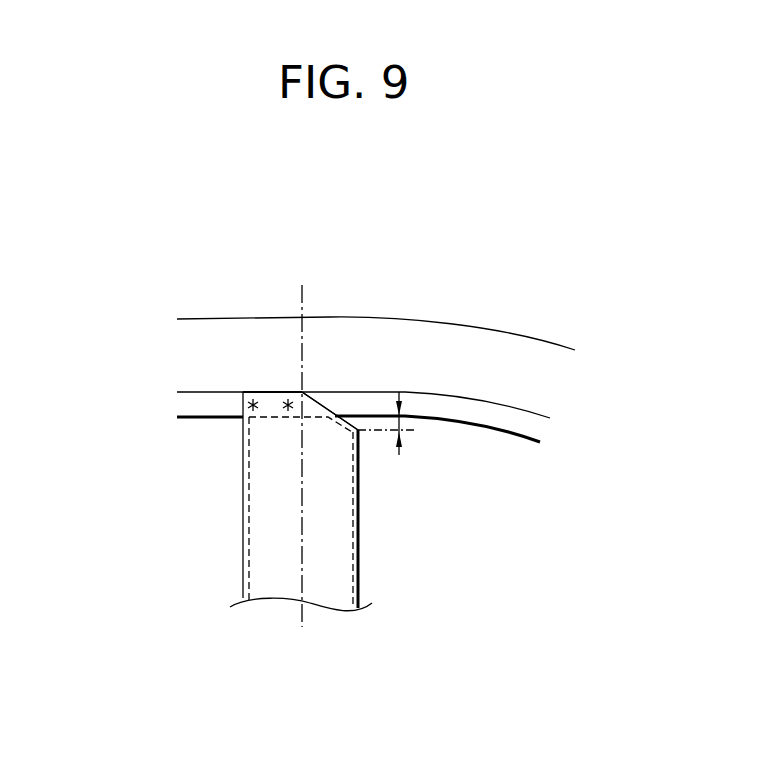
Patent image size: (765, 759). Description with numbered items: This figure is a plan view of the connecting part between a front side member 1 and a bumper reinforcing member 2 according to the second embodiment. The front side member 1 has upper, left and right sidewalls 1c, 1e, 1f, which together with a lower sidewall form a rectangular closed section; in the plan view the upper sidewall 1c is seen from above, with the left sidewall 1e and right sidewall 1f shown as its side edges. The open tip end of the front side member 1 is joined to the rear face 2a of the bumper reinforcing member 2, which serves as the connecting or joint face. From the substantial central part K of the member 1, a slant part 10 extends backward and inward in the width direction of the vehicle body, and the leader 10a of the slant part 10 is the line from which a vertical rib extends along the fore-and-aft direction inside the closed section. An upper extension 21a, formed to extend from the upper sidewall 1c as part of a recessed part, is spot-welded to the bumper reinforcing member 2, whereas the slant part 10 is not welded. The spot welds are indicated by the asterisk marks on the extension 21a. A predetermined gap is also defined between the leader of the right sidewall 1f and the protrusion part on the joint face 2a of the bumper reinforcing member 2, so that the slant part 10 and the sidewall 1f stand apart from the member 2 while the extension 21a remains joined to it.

The front side member 1 is at (245, 493).
The upper sidewall 1c is at (330, 594).
The left sidewall 1e is at (243, 562).
The right sidewall 1f is at (360, 553).
The bumper reinforcing member 2 is at (418, 316).
The rear face 2a is at (212, 393).
The slant part 10 is at (337, 412).
The leader of the slant part 10a is at (303, 392).
The upper extension 21a is at (273, 392).
The central part K is at (303, 498).